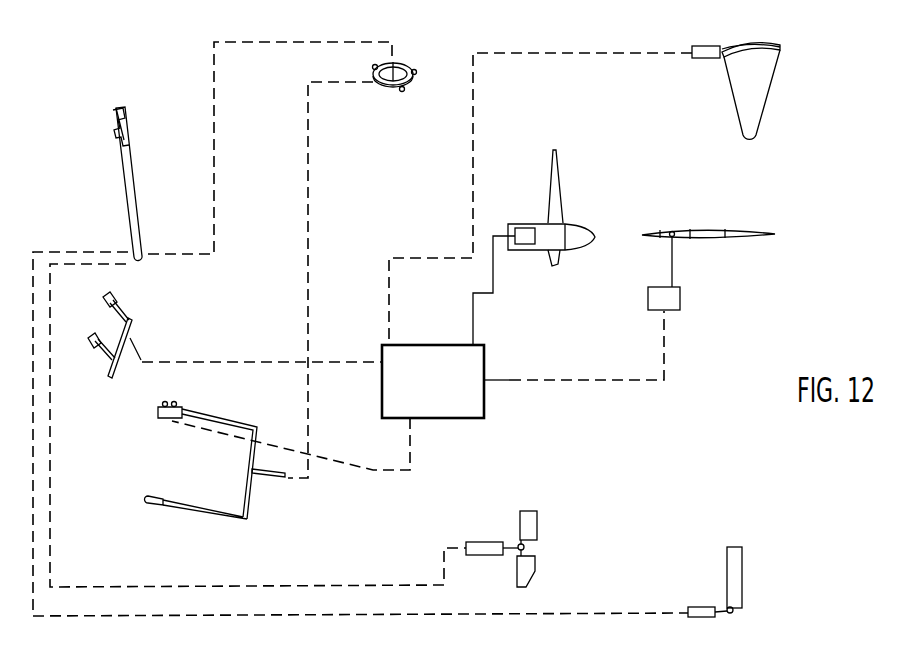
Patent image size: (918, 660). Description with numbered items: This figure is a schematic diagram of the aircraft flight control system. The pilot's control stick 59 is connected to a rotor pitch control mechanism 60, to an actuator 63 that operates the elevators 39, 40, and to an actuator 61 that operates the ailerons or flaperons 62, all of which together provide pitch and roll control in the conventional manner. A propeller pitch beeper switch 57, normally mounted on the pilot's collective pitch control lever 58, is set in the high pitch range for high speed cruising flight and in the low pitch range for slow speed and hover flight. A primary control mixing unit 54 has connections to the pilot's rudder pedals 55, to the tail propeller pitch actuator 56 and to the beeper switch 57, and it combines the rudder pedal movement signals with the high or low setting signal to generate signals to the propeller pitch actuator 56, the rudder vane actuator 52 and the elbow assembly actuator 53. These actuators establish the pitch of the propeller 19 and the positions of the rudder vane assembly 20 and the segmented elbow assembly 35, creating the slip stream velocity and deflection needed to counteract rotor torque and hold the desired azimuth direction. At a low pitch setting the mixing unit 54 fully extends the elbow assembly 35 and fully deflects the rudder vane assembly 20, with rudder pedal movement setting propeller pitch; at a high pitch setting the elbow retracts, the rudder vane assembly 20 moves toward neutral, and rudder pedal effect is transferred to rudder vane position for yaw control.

The propeller 19 is at (562, 252).
The rudder vane assembly 20 is at (741, 221).
The segmented elbow assembly 35 is at (767, 35).
The elevator 39 is at (533, 568).
The elevator 40 is at (531, 522).
The rudder vane actuator 52 is at (672, 305).
The elbow assembly actuator 53 is at (703, 51).
The primary control mixing unit 54 is at (441, 389).
The rudder pedals 55 is at (146, 321).
The tail propeller pitch actuator 56 is at (525, 244).
The propeller pitch beeper switch 57 is at (180, 408).
The collective pitch control lever 58 is at (203, 489).
The control stick 59 is at (135, 170).
The rotor pitch control mechanism 60 is at (377, 99).
The actuator 61 is at (700, 610).
The ailerons or flaperons 62 is at (738, 580).
The actuator 63 is at (490, 542).